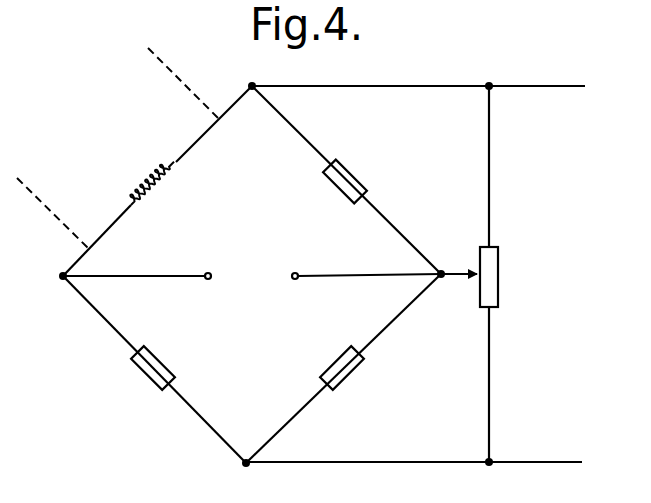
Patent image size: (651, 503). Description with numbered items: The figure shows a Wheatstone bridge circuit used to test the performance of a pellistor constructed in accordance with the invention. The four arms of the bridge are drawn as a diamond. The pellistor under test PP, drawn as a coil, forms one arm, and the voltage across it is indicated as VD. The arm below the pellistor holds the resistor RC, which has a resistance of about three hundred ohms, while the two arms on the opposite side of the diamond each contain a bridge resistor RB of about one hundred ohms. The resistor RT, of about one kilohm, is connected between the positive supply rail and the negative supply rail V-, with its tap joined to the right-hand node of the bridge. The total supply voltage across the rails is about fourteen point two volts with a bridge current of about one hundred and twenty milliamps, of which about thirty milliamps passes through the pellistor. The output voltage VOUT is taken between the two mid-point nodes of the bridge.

The pellistor under test PP is at (136, 175).
The voltage across the pellistor VD is at (157, 66).
The bridge resistor RB is at (353, 278).
The compensating resistor RC is at (146, 379).
The trimming resistor RT is at (486, 277).
The bridge output voltage VOUT is at (252, 272).
The negative supply terminal V- is at (568, 477).